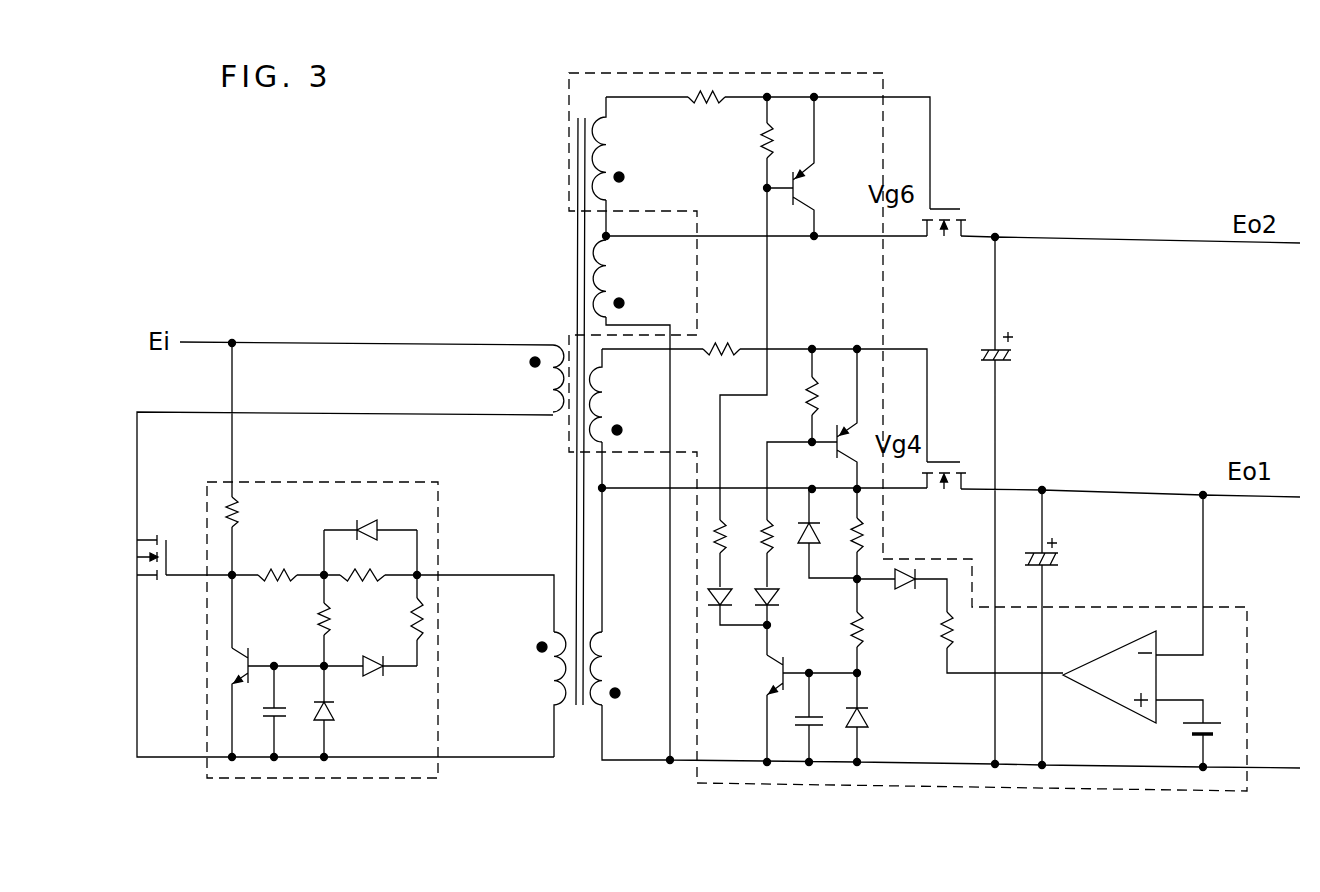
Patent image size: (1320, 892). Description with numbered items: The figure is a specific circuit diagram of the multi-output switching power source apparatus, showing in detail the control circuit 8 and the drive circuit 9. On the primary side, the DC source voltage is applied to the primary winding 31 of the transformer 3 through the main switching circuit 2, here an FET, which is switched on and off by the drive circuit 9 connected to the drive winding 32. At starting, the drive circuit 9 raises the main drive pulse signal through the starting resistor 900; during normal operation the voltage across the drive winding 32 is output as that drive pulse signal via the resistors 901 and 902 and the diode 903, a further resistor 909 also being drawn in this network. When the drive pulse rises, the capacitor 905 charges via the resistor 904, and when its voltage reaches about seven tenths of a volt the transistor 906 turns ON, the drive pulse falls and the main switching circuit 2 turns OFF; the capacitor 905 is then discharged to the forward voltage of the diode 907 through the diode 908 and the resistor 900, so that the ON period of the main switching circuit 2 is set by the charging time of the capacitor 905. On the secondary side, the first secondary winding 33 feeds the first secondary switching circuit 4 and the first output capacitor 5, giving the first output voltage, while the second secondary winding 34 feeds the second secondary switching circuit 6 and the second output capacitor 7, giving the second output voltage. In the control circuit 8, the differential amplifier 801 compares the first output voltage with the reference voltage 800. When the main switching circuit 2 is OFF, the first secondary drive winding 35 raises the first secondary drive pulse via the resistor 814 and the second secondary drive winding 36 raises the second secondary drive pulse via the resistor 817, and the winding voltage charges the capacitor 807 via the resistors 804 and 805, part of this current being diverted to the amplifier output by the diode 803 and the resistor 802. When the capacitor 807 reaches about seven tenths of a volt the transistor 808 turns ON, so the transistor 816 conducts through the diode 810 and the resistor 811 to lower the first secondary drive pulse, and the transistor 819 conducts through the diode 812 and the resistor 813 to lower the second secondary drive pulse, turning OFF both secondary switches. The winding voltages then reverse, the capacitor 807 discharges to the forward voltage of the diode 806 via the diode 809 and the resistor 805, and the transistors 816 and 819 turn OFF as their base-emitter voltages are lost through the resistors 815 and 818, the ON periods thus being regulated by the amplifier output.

The main switching circuit 2 is at (128, 548).
The transformer 3 is at (575, 727).
The first secondary switching circuit 4 is at (950, 460).
The first output capacitor 5 is at (1062, 560).
The second secondary switching circuit 6 is at (947, 208).
The second output capacitor 7 is at (1013, 353).
The control circuit 8 is at (569, 88).
The drive circuit 9 is at (207, 505).
The primary winding 31 is at (548, 388).
The drive winding 32 is at (553, 690).
The first secondary winding 33 is at (600, 695).
The second secondary winding 34 is at (612, 262).
The first secondary drive winding 35 is at (602, 395).
The second secondary drive winding 36 is at (610, 150).
The reference voltage 800 is at (1186, 730).
The differential amplifier 801 is at (1112, 690).
The resistor 802 is at (950, 640).
The diode 803 is at (905, 590).
The resistor 804 is at (862, 542).
The resistor 805 is at (860, 636).
The diode 806 is at (860, 735).
The capacitor 807 is at (826, 722).
The transistor 808 is at (763, 672).
The diode 809 is at (803, 515).
The diode 810 is at (758, 594).
The resistor 811 is at (772, 548).
The diode 812 is at (706, 594).
The resistor 813 is at (712, 538).
The resistor 814 is at (722, 345).
The resistor 815 is at (808, 393).
The transistor 816 is at (860, 440).
The resistor 817 is at (708, 95).
The resistor 818 is at (762, 145).
The transistor 819 is at (808, 190).
The starting resistor 900 is at (238, 512).
The resistor 901 is at (290, 573).
The resistor 902 is at (392, 573).
The diode 903 is at (382, 528).
The resistor 904 is at (322, 625).
The capacitor 905 is at (282, 722).
The transistor 906 is at (238, 660).
The diode 907 is at (330, 722).
The diode 908 is at (378, 675).
The resistor 909 is at (420, 630).